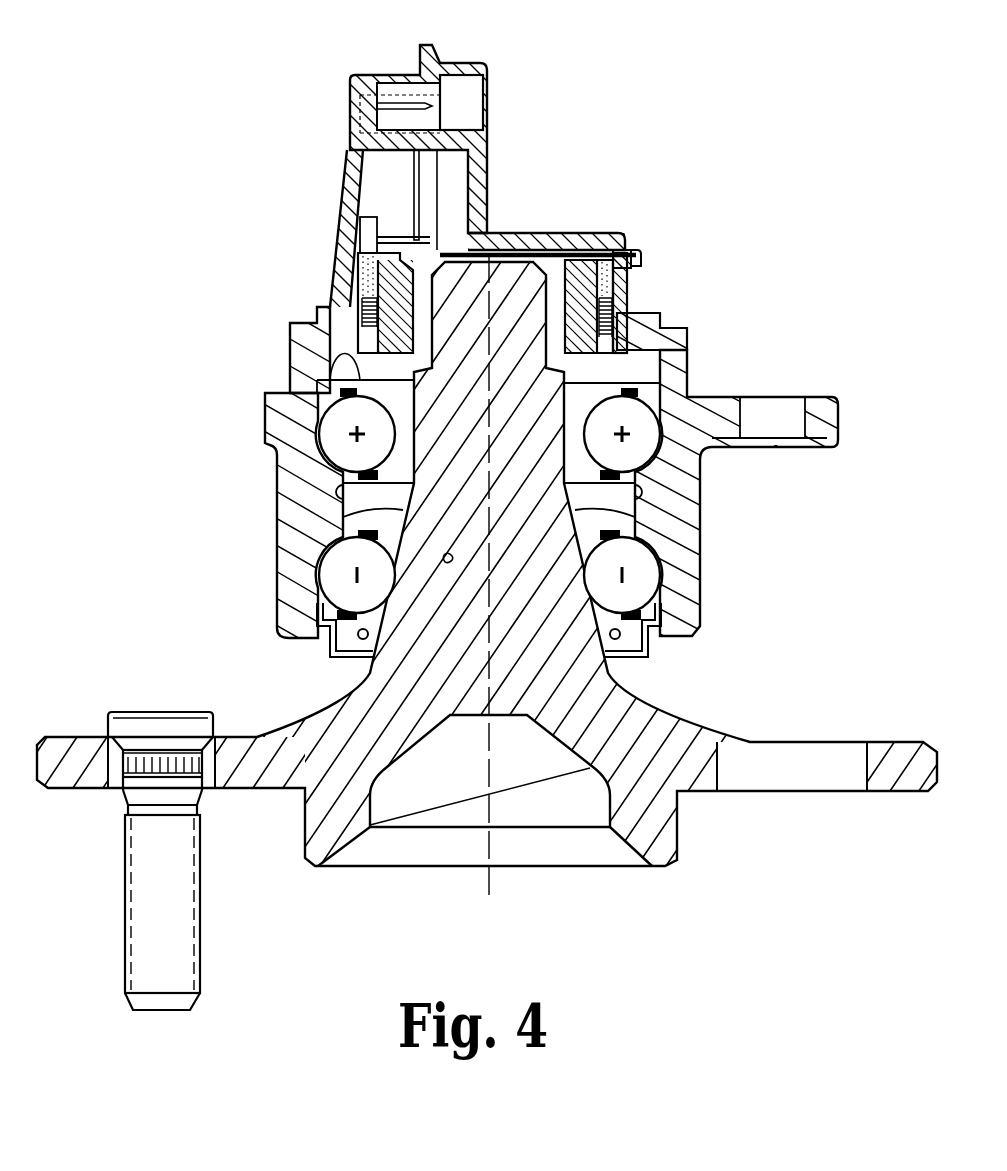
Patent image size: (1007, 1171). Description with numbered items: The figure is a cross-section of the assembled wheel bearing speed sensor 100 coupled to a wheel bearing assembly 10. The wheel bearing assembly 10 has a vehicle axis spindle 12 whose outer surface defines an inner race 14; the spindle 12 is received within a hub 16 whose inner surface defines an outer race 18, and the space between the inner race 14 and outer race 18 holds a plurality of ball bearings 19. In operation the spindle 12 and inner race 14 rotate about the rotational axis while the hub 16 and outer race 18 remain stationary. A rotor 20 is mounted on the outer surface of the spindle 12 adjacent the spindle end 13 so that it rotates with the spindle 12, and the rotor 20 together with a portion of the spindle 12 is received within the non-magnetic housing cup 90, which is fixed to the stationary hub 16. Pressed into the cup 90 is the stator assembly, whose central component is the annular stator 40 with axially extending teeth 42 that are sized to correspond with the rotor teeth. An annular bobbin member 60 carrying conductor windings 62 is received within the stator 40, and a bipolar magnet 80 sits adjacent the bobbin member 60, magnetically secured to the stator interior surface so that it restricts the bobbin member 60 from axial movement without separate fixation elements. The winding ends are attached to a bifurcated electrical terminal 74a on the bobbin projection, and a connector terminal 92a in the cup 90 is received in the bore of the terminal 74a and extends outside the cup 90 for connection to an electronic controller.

The wheel bearing assembly 10 is at (263, 430).
The vehicle axis spindle 12 is at (383, 677).
The spindle end 13 is at (507, 249).
The inner race 14 is at (400, 530).
The hub 16 is at (300, 368).
The outer race 18 is at (345, 497).
The ball bearings 19 is at (322, 430).
The rotor 20 is at (390, 287).
The stator 40 is at (620, 252).
The teeth 42 is at (642, 345).
The bobbin member 60 is at (622, 280).
The conductor windings 62 is at (627, 305).
The electrical terminal 74a is at (367, 188).
The magnet 80 is at (625, 257).
The housing cup 90 is at (455, 62).
The connector terminal 92a is at (352, 173).
The wheel bearing speed sensor 100 is at (552, 234).